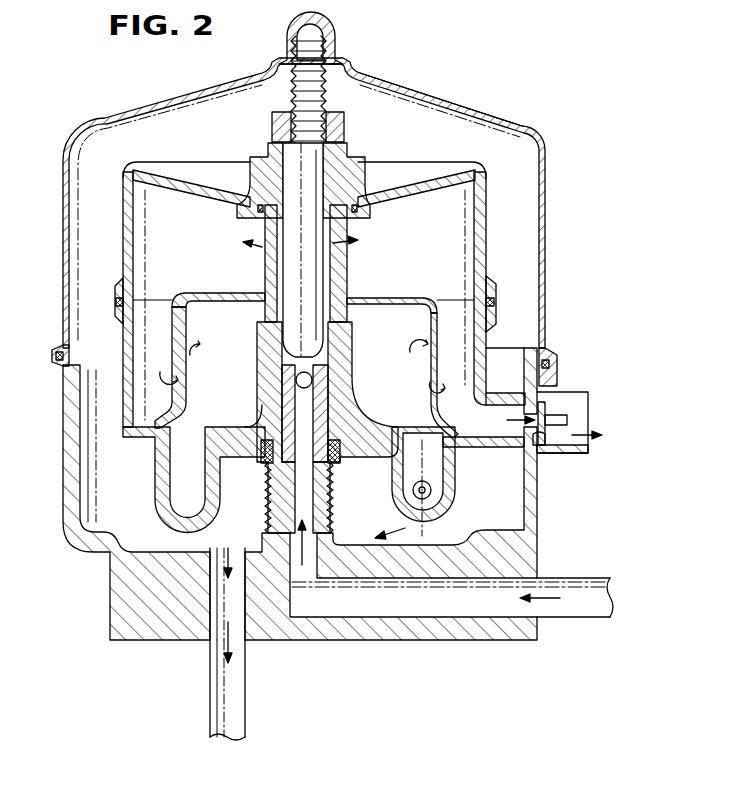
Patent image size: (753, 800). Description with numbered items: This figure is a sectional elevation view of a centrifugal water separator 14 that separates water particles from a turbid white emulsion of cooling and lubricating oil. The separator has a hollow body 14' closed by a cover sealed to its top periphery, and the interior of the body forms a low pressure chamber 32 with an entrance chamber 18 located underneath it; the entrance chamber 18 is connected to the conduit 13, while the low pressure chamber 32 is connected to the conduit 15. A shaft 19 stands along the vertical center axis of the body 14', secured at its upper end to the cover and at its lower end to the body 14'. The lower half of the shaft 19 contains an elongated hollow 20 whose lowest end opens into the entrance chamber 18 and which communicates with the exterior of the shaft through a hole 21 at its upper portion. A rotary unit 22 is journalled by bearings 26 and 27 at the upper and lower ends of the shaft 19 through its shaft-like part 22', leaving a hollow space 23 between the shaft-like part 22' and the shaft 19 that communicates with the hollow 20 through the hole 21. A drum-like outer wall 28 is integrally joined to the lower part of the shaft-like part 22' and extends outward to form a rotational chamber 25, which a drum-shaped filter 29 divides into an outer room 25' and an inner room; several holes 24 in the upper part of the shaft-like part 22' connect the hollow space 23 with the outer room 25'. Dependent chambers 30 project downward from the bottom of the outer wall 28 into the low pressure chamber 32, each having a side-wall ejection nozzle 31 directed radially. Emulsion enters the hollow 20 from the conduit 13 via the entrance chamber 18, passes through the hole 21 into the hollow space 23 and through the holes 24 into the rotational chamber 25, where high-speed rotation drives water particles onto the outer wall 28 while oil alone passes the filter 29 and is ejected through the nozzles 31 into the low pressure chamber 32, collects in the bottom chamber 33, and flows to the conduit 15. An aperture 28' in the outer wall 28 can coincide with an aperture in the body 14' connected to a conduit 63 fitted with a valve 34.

The conduit 13 is at (583, 620).
The centrifugal water separator 14 is at (476, 100).
The hollow body 14′ is at (527, 545).
The conduit 15 is at (242, 724).
The entrance chamber 18 is at (390, 602).
The shaft 19 is at (310, 225).
The elongated hollow 20 is at (305, 417).
The hole 21 is at (312, 367).
The rotary unit 22 is at (352, 268).
The shaft-like part 22′ is at (348, 288).
The hollow space 23 is at (267, 286).
The holes 24 is at (343, 240).
The rotational chamber 25 is at (457, 222).
The outer room 25′ is at (145, 270).
The bearing 26 is at (264, 456).
The bearing 27 is at (343, 150).
The drum-like outer wall 28 is at (122, 410).
The aperture 28′ is at (492, 427).
The drum-shaped filter 29 is at (185, 351).
The dependent chamber 30 is at (437, 478).
The ejection nozzle 31 is at (437, 546).
The low pressure chamber 32 is at (358, 550).
The bottom chamber 33 is at (225, 603).
The valve 34 is at (553, 390).
The conduit 63 is at (589, 404).